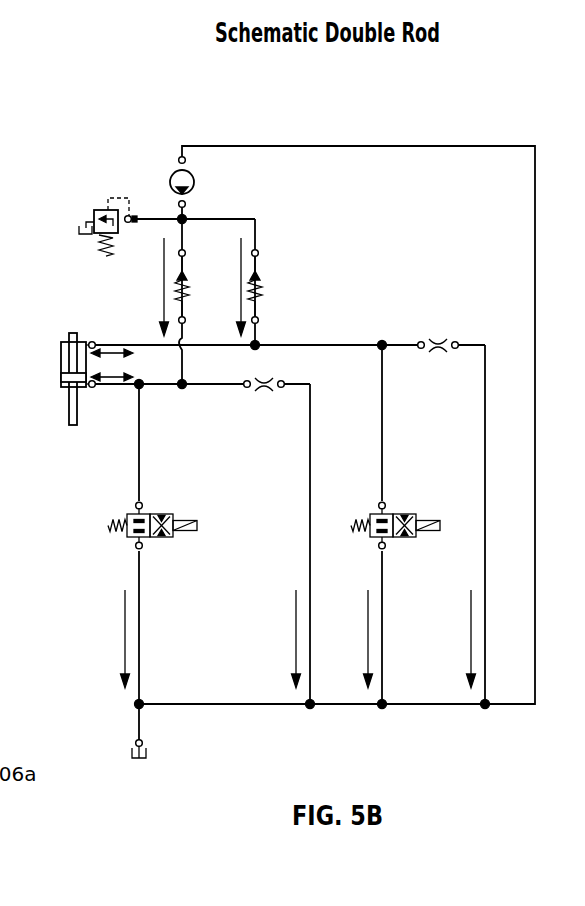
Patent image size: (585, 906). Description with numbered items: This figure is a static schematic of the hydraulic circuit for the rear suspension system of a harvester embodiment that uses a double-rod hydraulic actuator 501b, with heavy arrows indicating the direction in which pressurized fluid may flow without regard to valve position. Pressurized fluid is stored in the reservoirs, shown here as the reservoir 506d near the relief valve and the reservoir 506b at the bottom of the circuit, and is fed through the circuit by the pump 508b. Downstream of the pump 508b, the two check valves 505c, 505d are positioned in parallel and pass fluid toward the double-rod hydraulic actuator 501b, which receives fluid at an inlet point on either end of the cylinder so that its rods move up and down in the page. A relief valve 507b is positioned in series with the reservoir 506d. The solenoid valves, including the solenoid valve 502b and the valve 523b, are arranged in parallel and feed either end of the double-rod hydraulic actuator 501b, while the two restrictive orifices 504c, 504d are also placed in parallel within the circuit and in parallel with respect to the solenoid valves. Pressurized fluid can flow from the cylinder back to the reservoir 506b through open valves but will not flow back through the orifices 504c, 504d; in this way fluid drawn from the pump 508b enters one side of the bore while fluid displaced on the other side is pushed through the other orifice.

The pump 508b is at (172, 180).
The relief valve 507b is at (118, 238).
The reservoir 506d is at (82, 240).
The check valve 505c is at (193, 292).
The check valve 505d is at (266, 292).
The double-rod hydraulic actuator 501b is at (80, 340).
The restrictive orifice 504c is at (262, 393).
The restrictive orifice 504d is at (435, 354).
The solenoid valve 502b is at (188, 518).
The solenoid valve 523b is at (410, 515).
The reservoir 506b is at (150, 757).